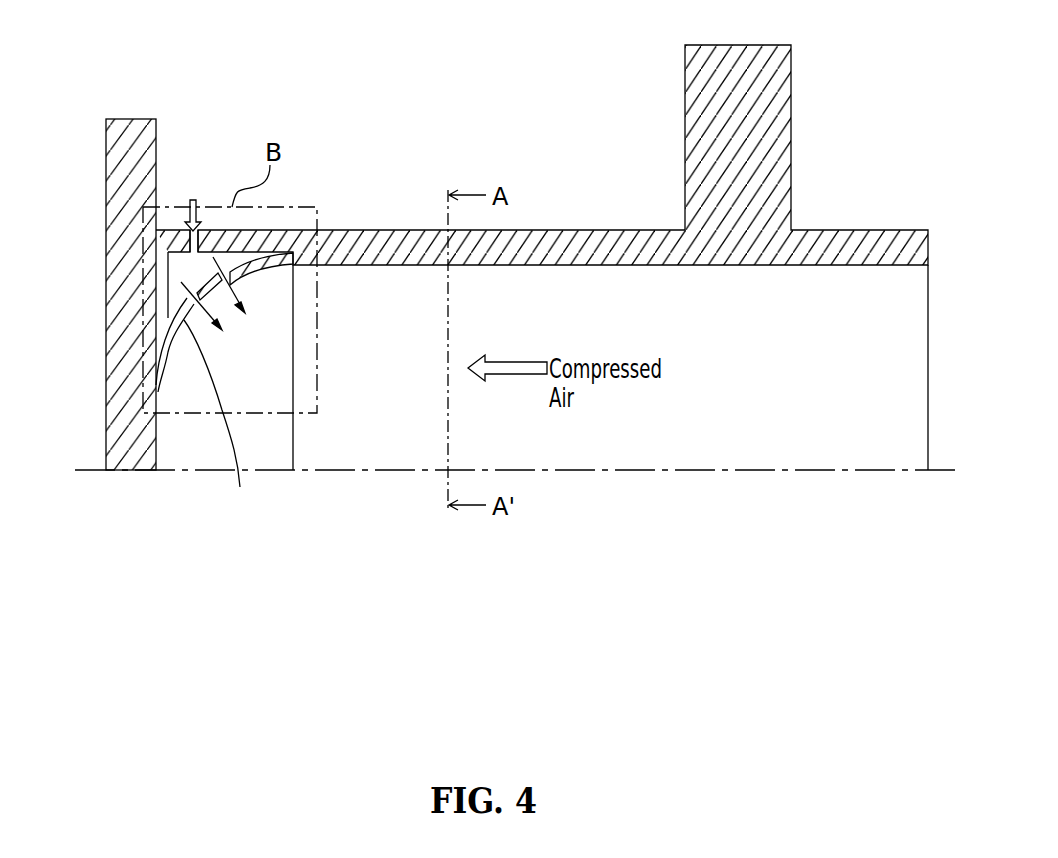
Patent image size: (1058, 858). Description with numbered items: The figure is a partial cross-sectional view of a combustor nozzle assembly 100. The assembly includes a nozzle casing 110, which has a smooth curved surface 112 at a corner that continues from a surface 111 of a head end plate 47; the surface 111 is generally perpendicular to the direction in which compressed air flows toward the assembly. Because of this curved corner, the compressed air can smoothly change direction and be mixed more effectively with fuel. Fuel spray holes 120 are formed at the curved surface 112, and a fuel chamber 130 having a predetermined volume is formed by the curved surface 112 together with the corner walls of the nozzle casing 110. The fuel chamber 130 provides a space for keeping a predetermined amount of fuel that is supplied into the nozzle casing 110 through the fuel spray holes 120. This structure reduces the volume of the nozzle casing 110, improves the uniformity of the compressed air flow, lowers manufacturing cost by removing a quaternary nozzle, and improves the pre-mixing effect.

The combustor nozzle assembly 100 is at (452, 52).
The nozzle casing 110 is at (556, 232).
The head end plate 47 is at (113, 162).
The fuel chamber 130 is at (195, 278).
The fuel spray holes 120 is at (232, 284).
The surface 111 is at (157, 435).
The curved surface 112 is at (222, 419).